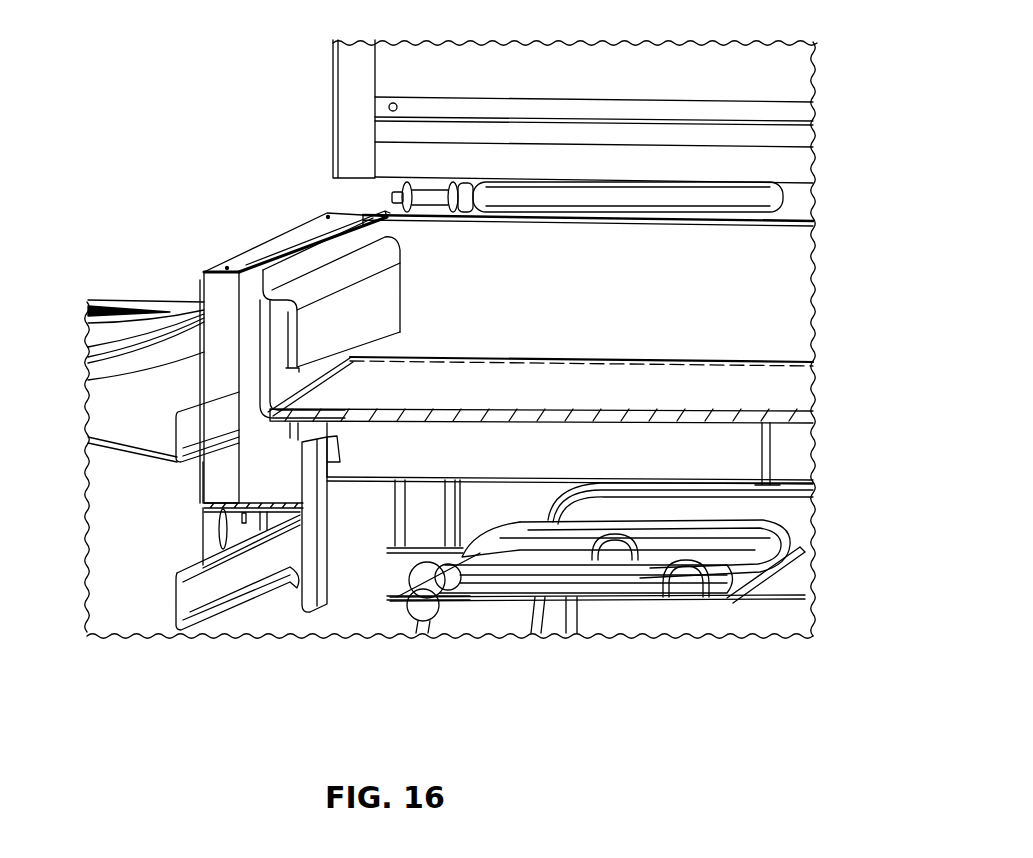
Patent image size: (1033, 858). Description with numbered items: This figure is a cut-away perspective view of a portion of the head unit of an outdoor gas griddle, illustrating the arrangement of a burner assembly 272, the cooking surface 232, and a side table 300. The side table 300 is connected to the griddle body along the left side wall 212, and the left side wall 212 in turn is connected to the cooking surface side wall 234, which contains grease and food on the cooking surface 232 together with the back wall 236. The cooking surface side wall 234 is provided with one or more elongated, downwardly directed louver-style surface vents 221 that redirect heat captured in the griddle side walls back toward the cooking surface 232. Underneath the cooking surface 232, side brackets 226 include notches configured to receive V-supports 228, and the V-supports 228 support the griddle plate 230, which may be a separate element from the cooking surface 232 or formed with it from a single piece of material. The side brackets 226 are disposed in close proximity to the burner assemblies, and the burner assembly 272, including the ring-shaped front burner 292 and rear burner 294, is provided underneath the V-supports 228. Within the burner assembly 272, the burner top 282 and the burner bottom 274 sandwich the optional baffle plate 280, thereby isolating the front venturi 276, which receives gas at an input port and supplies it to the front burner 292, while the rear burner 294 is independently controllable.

The left side wall 212 is at (218, 296).
The surface vents 221 is at (388, 307).
The side brackets 226 is at (320, 478).
The V-supports 228 is at (418, 467).
The griddle plate 230 is at (772, 413).
The cooking surface 232 is at (598, 383).
The cooking surface side wall 234 is at (380, 237).
The back wall 236 is at (736, 282).
The burner assembly 272 is at (732, 562).
The burner bottom 274 is at (706, 600).
The front venturi 276 is at (425, 615).
The baffle plate 280 is at (677, 593).
The burner top 282 is at (603, 562).
The front burner 292 is at (485, 606).
The rear burner 294 is at (800, 598).
The side table 300 is at (117, 432).